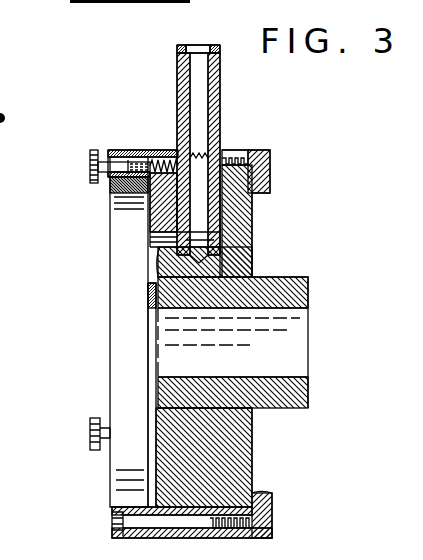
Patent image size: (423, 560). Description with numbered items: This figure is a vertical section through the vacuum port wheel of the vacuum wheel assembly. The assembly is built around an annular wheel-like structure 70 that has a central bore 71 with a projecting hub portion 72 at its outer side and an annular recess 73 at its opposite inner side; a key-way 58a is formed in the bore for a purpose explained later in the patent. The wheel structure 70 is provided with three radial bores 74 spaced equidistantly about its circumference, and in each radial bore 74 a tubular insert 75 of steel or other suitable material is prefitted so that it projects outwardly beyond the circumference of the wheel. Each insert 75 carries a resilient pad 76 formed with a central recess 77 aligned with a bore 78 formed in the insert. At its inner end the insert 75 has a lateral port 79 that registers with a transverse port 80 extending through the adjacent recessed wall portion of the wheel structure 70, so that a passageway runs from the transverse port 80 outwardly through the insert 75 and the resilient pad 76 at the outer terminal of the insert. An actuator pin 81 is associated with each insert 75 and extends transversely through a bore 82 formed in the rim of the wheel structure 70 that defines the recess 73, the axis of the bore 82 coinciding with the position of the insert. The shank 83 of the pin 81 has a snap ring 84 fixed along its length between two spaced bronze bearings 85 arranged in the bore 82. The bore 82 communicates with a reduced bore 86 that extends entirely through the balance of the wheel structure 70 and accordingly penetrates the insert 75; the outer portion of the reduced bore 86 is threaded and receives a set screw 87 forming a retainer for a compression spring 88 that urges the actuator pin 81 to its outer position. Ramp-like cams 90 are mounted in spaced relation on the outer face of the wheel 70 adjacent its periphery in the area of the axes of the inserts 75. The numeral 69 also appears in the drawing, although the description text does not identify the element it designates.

The key-way 58a is at (308, 378).
The base 69 is at (223, 557).
The annular wheel-like structure 70 is at (252, 440).
The central bore 71 is at (308, 356).
The projecting hub portion 72 is at (284, 277).
The annular recess 73 is at (112, 262).
The radial bore 74 is at (252, 213).
The tubular insert 75 is at (221, 128).
The resilient pad 76 is at (211, 45).
The central recess 77 is at (194, 44).
The bore 78 is at (222, 100).
The lateral port 79 is at (225, 238).
The transverse port 80 is at (153, 308).
The actuator pin 81 is at (86, 158).
The bore 82 is at (151, 150).
The shank 83 is at (100, 138).
The snap ring 84 is at (118, 150).
The bronze bearing 85 is at (112, 192).
The reduced bore 86 is at (172, 150).
The set screw 87 is at (250, 150).
The compression spring 88 is at (220, 138).
The ramp-like cam 90 is at (272, 170).